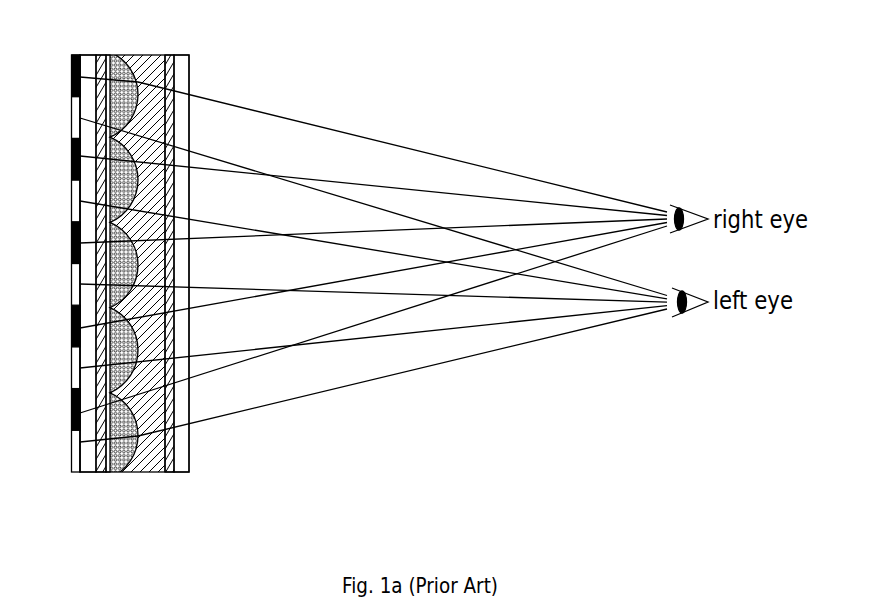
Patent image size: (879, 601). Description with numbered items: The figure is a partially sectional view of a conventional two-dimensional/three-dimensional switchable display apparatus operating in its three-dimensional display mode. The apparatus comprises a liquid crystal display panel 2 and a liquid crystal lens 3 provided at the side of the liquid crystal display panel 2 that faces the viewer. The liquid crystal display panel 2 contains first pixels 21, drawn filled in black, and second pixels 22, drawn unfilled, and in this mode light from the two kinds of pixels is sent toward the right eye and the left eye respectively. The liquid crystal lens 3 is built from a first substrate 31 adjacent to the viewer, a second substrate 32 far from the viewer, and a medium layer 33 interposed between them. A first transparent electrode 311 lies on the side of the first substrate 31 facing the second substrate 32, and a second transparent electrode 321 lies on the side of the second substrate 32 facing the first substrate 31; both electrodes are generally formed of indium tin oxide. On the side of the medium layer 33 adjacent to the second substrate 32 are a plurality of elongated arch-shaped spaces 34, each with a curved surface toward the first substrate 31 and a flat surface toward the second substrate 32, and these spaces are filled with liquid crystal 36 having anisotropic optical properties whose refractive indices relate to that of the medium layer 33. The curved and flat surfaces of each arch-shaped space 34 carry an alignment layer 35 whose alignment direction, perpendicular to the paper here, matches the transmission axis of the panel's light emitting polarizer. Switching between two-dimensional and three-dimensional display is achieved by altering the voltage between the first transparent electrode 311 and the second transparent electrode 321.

The liquid crystal display panel 2 is at (73, 54).
The liquid crystal lens 3 is at (80, 48).
The first pixels 21 is at (70, 327).
The second pixels 22 is at (70, 118).
The first substrate 31 is at (184, 462).
The first transparent electrode 311 is at (177, 462).
The second substrate 32 is at (77, 469).
The second transparent electrode 321 is at (90, 463).
The medium layer 33 is at (152, 461).
The arch-shaped spaces 34 is at (128, 462).
The alignment layer 35 is at (110, 462).
The liquid crystal 36 is at (117, 353).